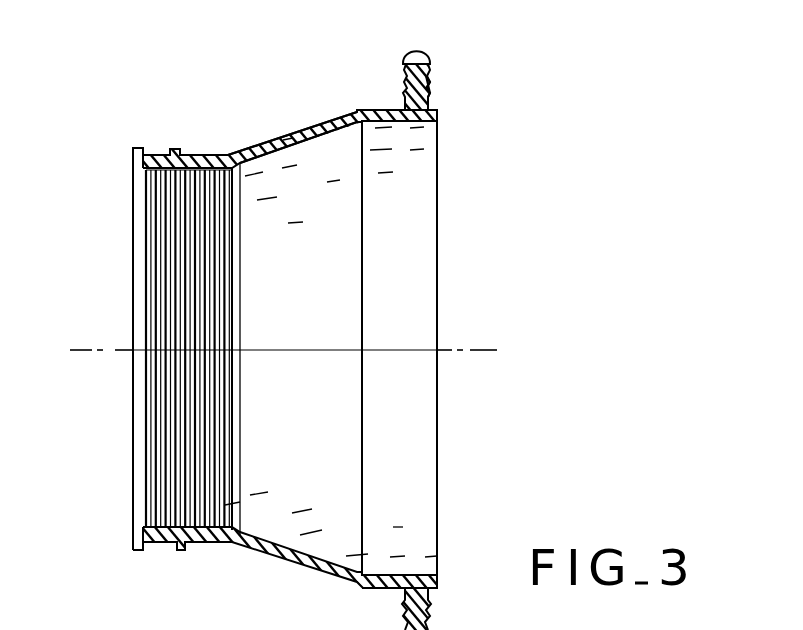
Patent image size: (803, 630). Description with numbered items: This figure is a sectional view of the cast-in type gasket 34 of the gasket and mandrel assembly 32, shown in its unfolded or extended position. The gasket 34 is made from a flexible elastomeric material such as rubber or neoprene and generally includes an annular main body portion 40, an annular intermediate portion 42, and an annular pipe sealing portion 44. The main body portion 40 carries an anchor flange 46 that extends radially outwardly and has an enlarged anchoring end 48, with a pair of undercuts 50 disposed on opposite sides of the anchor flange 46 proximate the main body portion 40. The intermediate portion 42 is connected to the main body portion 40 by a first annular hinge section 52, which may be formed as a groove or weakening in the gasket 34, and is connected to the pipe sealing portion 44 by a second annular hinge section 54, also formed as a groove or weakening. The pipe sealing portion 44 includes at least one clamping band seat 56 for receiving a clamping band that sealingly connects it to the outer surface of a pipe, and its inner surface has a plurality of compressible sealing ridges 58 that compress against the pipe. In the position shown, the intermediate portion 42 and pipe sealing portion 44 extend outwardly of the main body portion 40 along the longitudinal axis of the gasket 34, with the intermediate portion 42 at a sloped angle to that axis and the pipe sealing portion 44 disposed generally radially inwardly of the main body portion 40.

The gasket and mandrel assembly 32 is at (480, 162).
The cast-in type gasket 34 is at (480, 162).
The main body portion 40 is at (407, 125).
The intermediate portion 42 is at (292, 133).
The pipe sealing portion 44 is at (212, 157).
The anchor flange 46 is at (426, 72).
The enlarged anchoring end 48 is at (412, 55).
The undercuts 50 is at (405, 97).
The first annular hinge section 52 is at (352, 115).
The second annular hinge section 54 is at (238, 175).
The clamping band seat 56 is at (163, 152).
The compressible sealing ridges 58 is at (156, 170).